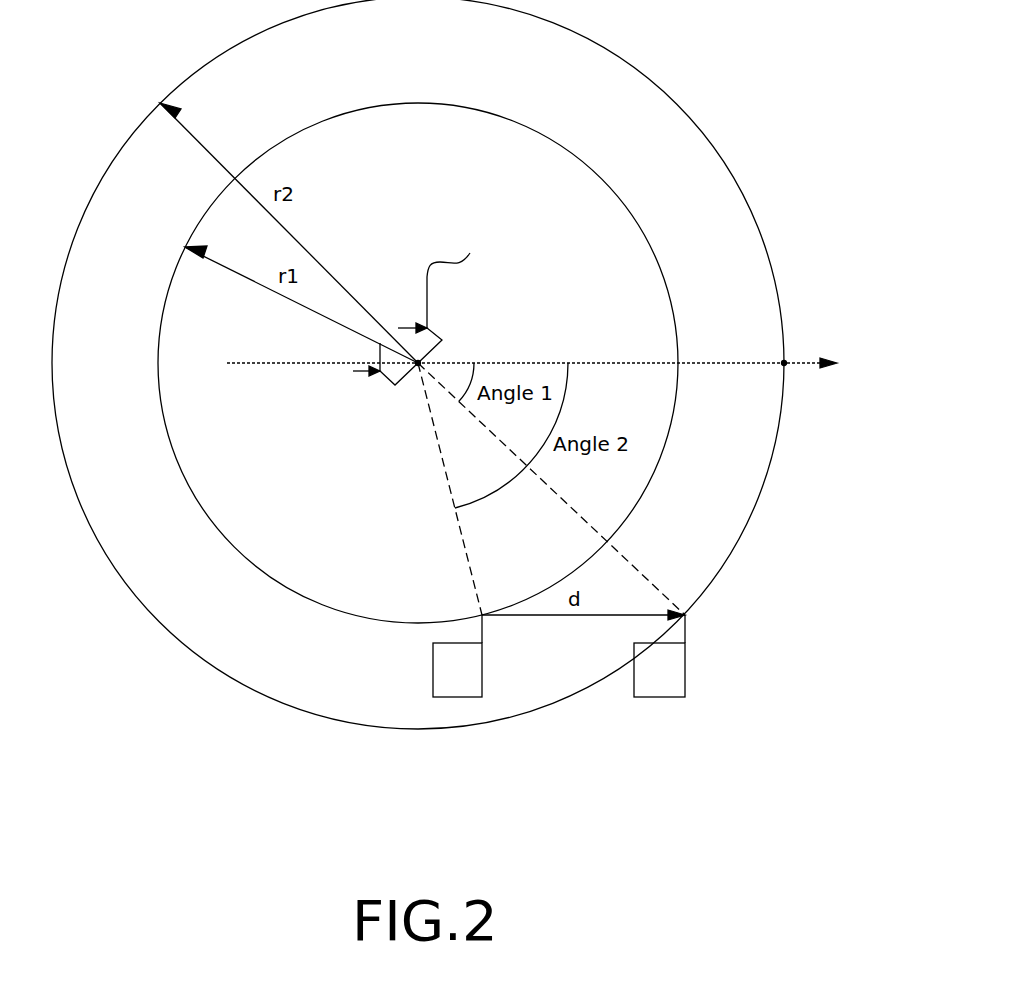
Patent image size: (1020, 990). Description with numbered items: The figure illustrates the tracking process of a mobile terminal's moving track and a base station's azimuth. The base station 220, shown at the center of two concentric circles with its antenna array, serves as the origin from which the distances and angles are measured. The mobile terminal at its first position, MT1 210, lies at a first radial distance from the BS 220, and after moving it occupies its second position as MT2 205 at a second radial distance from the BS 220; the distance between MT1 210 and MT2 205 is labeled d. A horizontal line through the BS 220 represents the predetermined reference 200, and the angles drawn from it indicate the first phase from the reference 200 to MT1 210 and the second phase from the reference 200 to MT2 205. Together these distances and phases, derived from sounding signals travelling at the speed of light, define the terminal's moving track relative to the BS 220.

The predetermined reference 200 is at (786, 366).
The MT2 205 is at (433, 668).
The MT1 210 is at (685, 668).
The BS 220 is at (440, 355).